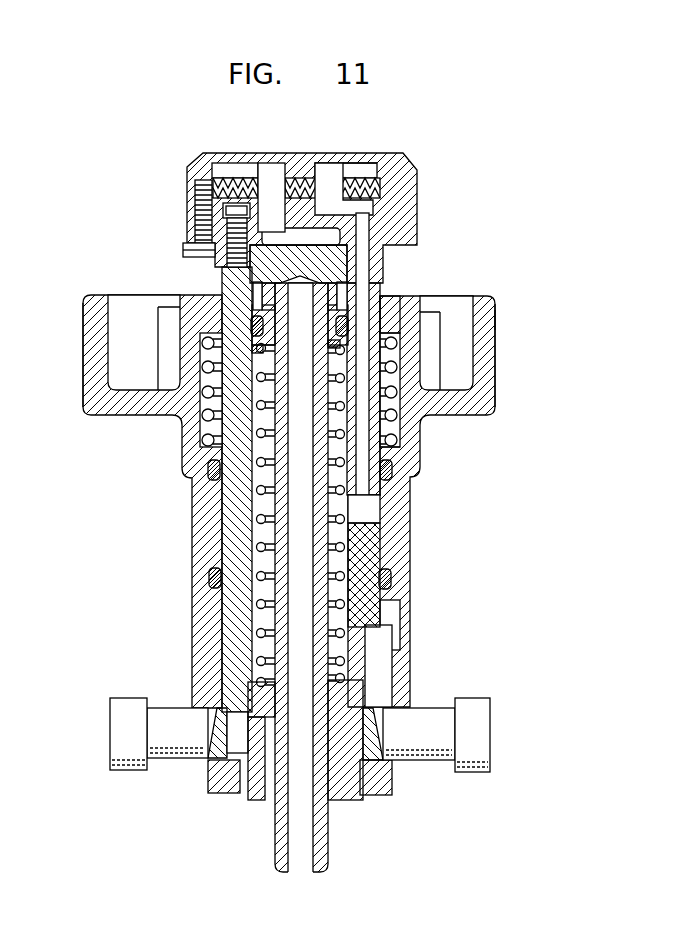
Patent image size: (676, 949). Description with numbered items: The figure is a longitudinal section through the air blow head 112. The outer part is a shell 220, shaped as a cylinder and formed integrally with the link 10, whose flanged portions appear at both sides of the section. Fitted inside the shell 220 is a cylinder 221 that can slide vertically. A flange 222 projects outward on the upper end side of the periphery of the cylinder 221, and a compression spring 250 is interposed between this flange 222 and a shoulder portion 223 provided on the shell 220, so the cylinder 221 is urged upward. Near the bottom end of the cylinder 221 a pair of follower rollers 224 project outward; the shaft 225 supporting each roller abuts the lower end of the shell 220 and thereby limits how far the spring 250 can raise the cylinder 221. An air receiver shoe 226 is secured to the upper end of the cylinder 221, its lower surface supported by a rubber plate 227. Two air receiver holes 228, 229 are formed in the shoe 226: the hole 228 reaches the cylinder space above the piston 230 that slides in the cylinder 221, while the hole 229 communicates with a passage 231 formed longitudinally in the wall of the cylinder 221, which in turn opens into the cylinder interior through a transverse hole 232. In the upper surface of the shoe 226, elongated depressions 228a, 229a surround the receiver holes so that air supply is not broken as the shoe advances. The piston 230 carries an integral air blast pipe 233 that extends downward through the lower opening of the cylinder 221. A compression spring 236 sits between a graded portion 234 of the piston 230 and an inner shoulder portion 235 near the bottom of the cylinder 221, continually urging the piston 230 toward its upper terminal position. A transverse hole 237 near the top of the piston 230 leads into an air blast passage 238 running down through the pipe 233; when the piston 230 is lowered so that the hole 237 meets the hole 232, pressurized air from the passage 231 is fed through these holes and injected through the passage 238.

The link 10 is at (83, 375).
The air blow head 112 is at (505, 318).
The shell 220 is at (402, 488).
The cylinder 221 is at (230, 505).
The flange 222 is at (388, 312).
The shoulder portion 223 is at (392, 452).
The follower rollers 224 is at (121, 770).
The shaft 225 is at (175, 758).
The air receiver shoe 226 is at (221, 161).
The rubber plate 227 is at (383, 188).
The air receiver hole 228 is at (285, 190).
The depressions 228a is at (232, 164).
The air receiver hole 229 is at (323, 190).
The long depression 229a is at (347, 167).
The piston 230 is at (273, 273).
The passage 231 is at (366, 254).
The transverse hole 232 is at (370, 520).
The air blast pipe 233 is at (323, 547).
The graded portion 234 is at (255, 348).
The inner shoulder portion 235 is at (260, 697).
The compression spring 236 is at (258, 545).
The hole 237 is at (282, 284).
The air blast passage 238 is at (286, 613).
The compression spring 250 is at (395, 412).